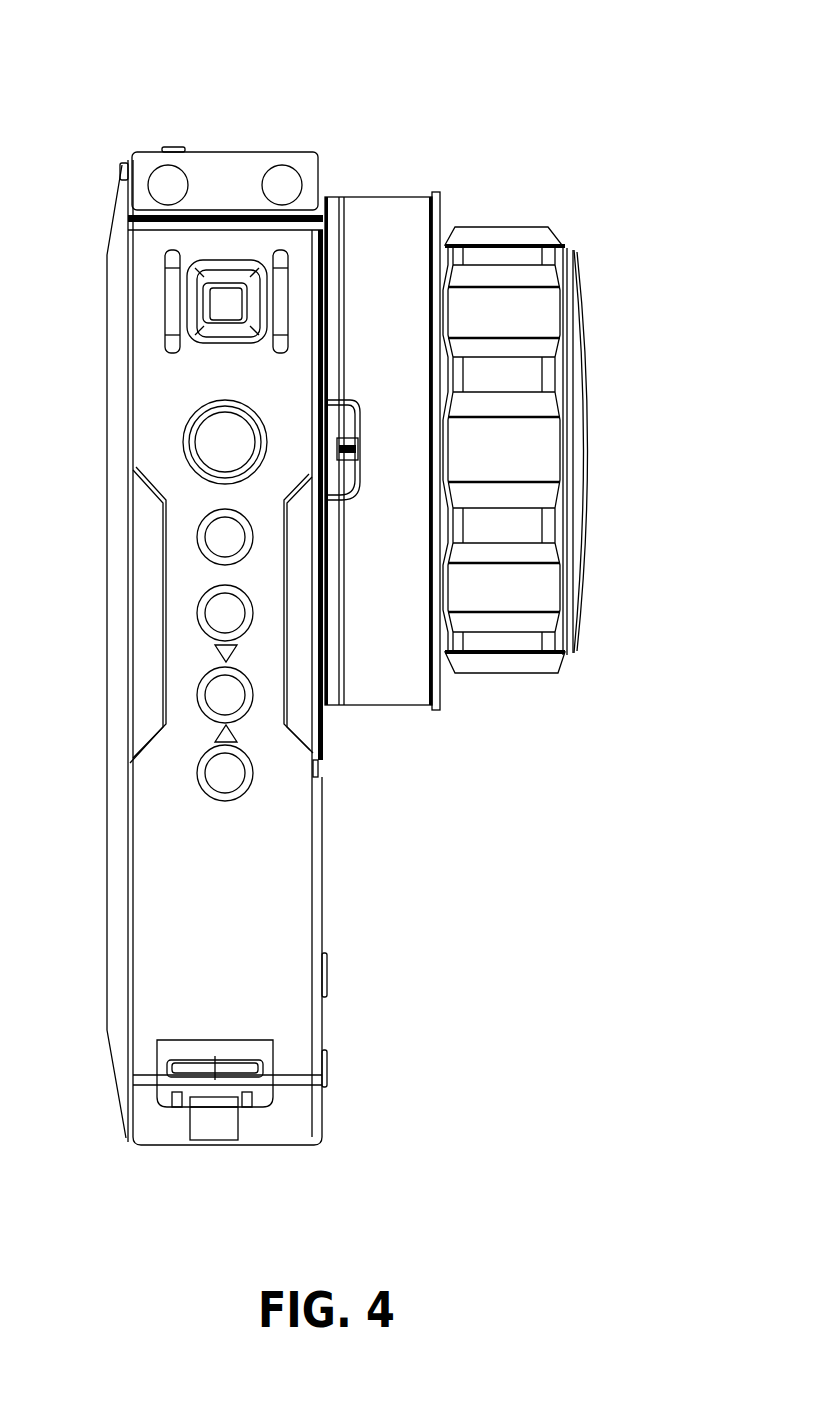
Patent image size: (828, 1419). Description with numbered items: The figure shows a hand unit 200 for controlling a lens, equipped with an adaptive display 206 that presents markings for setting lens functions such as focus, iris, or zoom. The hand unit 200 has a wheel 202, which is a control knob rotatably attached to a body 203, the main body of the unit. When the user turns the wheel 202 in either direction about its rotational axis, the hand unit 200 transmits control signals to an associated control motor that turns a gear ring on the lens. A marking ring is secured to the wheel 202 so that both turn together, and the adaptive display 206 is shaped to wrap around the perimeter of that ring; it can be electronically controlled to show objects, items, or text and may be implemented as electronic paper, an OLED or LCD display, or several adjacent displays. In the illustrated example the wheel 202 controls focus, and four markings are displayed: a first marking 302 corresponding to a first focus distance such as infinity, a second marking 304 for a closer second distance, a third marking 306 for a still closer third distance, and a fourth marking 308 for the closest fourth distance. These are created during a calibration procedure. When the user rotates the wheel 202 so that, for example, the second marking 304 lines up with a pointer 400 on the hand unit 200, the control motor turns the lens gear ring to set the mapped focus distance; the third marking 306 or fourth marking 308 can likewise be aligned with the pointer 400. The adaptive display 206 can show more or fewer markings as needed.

The hand unit 200 is at (566, 69).
The wheel 202 is at (520, 225).
The body 203 is at (225, 153).
The adaptive display 206 is at (363, 192).
The first marking 302 is at (422, 252).
The second marking 304 is at (422, 370).
The third marking 306 is at (422, 449).
The fourth marking 308 is at (422, 555).
The pointer 400 is at (347, 442).